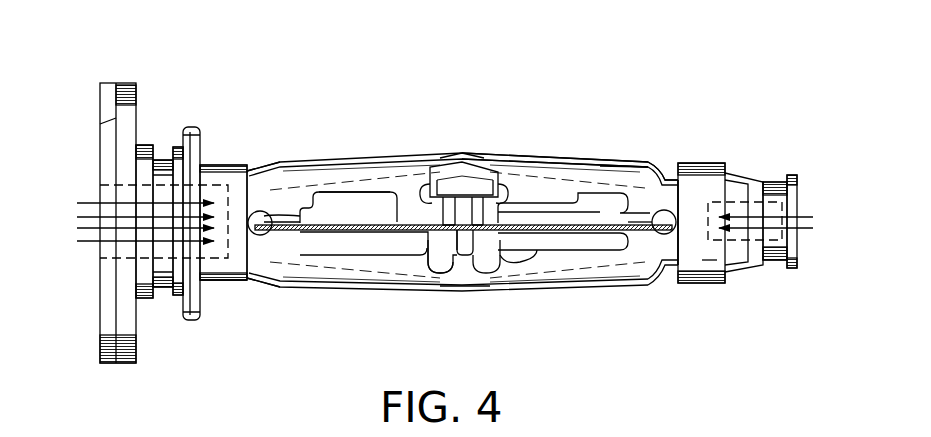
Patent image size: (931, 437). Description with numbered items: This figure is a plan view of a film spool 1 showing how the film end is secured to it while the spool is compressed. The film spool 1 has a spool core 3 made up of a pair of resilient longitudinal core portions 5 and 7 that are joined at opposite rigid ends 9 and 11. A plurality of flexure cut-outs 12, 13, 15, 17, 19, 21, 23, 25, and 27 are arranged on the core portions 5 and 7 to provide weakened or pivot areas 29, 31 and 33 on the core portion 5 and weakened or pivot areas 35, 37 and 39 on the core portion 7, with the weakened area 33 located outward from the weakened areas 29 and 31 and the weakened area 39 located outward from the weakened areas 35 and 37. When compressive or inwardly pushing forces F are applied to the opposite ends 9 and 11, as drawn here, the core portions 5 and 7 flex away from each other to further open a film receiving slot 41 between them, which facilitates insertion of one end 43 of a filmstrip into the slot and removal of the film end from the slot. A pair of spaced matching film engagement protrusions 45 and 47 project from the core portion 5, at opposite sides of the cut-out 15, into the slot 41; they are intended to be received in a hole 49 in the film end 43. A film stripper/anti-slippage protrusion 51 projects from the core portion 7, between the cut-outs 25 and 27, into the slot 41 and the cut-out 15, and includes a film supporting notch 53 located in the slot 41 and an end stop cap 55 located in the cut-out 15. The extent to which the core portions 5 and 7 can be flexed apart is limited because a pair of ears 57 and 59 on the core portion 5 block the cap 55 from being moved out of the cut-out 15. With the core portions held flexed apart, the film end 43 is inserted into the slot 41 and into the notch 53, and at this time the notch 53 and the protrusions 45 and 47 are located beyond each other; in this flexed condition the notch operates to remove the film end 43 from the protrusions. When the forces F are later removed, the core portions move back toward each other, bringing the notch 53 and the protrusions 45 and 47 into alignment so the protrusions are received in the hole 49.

The film spool 1 is at (440, 101).
The spool core 3 is at (389, 151).
The core portion 5 is at (577, 157).
The core portion 7 is at (573, 287).
The rigid end 9 is at (236, 165).
The rigid end 11 is at (713, 163).
The flexure cut-out 12 is at (253, 177).
The flexure cut-out 13 is at (664, 176).
The flexure cut-out 15 is at (443, 182).
The flexure cut-out 17 is at (348, 207).
The flexure cut-out 19 is at (678, 208).
The flexure cut-out 21 is at (263, 253).
The flexure cut-out 23 is at (665, 262).
The flexure cut-out 25 is at (437, 263).
The flexure cut-out 27 is at (487, 264).
The weakened or pivot area 29 is at (263, 193).
The weakened or pivot area 31 is at (663, 191).
The weakened or pivot area 33 is at (462, 157).
The weakened or pivot area 35 is at (246, 279).
The weakened or pivot area 37 is at (663, 251).
The weakened or pivot area 39 is at (461, 286).
The film receiving slot 41 is at (352, 198).
The film end 43 is at (578, 227).
The film engagement protrusion 45 is at (435, 223).
The film engagement protrusion 47 is at (508, 211).
The hole 49 is at (486, 247).
The film stripper/anti-slippage protrusion 51 is at (510, 250).
The film supporting notch 53 is at (460, 237).
The end stop cap 55 is at (493, 183).
The ear 57 is at (437, 200).
The ear 59 is at (496, 200).
The compressive or inwardly pushing forces F is at (88, 203).